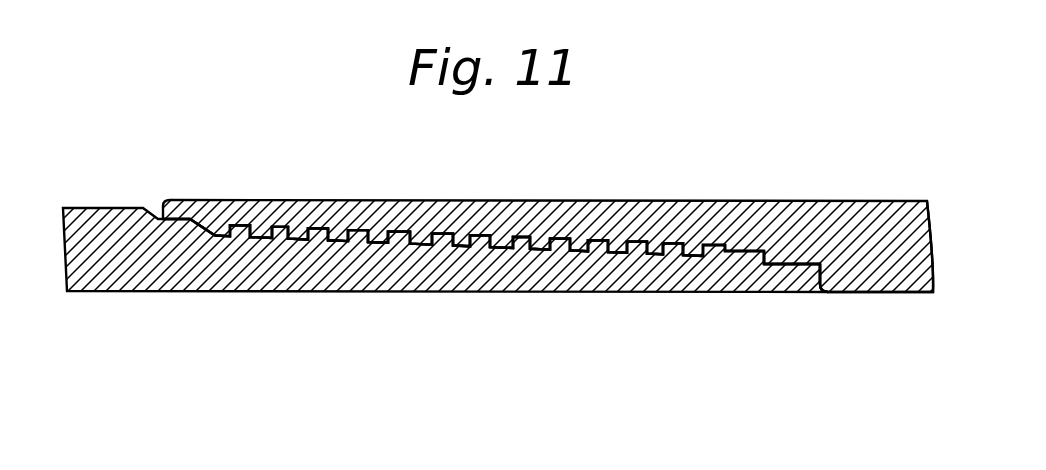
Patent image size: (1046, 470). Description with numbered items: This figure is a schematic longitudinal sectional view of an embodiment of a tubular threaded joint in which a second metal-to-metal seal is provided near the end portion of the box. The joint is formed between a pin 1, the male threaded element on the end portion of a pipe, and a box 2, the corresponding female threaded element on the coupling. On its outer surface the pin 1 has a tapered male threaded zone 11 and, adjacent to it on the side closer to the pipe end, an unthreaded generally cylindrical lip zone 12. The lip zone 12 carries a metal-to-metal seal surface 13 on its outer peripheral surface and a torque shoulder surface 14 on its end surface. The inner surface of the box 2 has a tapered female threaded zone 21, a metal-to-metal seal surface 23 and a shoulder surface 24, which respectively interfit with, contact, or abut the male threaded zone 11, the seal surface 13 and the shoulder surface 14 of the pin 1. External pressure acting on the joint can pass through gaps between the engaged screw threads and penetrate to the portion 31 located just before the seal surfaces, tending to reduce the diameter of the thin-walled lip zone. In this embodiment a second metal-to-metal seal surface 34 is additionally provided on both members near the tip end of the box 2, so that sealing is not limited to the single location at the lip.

The pin 1 is at (298, 260).
The box 2 is at (593, 214).
The tapered male threaded zone 11 is at (478, 240).
The lip zone 12 is at (790, 265).
The metal-to-metal seal surface 13 is at (765, 263).
The torque shoulder surface 14 is at (812, 291).
The tapered female threaded zone 21 is at (470, 241).
The metal-to-metal seal surface 23 is at (764, 262).
The shoulder surface 24 is at (822, 284).
The portion just before the seal surfaces 31 is at (730, 252).
The second metal-to-metal seal surface 34 is at (190, 222).